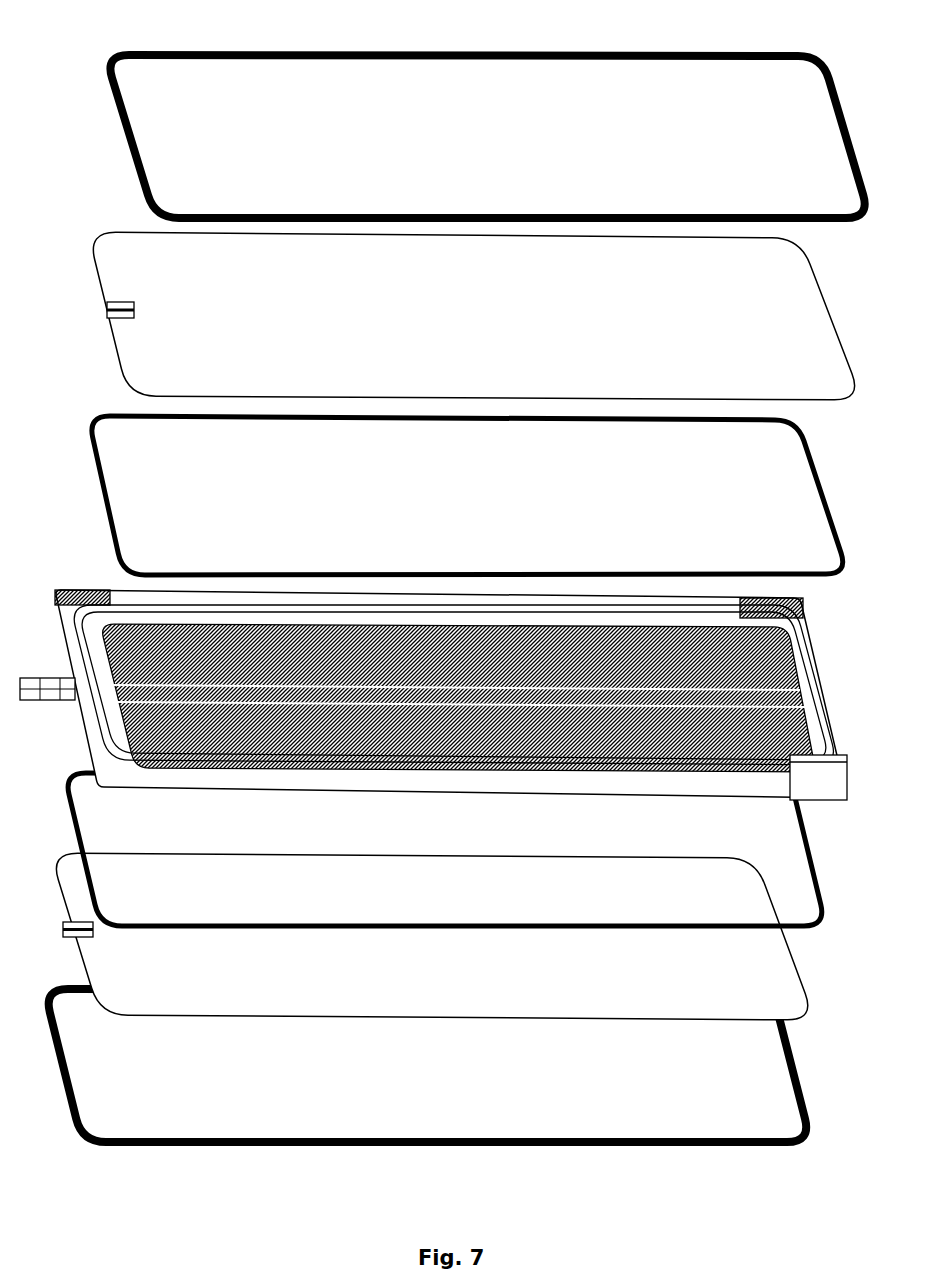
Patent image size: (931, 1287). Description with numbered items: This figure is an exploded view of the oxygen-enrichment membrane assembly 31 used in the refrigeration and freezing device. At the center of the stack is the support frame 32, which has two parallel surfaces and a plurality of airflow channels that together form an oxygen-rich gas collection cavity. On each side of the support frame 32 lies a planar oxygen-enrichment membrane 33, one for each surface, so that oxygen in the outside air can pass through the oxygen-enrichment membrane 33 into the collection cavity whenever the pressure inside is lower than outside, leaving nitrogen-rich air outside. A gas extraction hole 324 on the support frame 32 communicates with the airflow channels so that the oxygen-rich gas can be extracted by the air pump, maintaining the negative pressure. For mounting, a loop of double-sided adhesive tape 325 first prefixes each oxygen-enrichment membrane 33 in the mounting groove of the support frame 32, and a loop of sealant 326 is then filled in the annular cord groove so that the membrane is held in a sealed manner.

The oxygen-enrichment membrane assembly 31 is at (88, 44).
The support frame 32 is at (433, 671).
The oxygen-enrichment membrane 33 is at (112, 942).
The gas extraction hole 324 is at (68, 693).
The double-sided adhesive tape 325 is at (70, 835).
The sealant 326 is at (63, 1070).